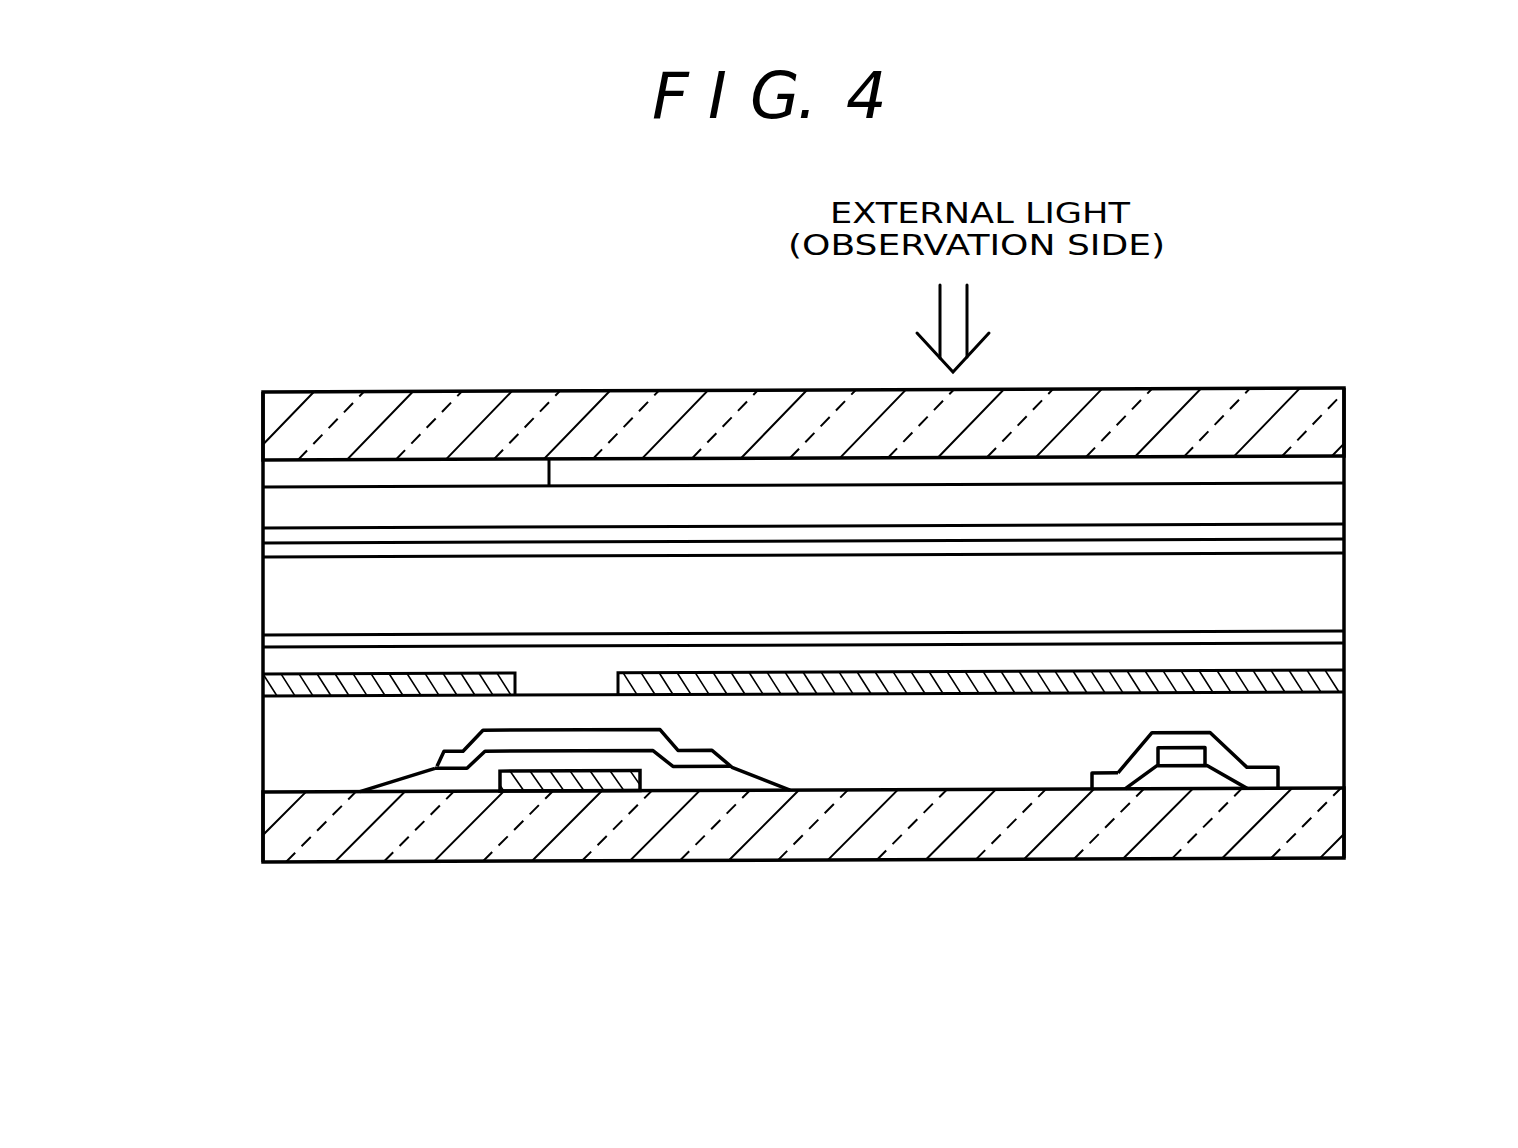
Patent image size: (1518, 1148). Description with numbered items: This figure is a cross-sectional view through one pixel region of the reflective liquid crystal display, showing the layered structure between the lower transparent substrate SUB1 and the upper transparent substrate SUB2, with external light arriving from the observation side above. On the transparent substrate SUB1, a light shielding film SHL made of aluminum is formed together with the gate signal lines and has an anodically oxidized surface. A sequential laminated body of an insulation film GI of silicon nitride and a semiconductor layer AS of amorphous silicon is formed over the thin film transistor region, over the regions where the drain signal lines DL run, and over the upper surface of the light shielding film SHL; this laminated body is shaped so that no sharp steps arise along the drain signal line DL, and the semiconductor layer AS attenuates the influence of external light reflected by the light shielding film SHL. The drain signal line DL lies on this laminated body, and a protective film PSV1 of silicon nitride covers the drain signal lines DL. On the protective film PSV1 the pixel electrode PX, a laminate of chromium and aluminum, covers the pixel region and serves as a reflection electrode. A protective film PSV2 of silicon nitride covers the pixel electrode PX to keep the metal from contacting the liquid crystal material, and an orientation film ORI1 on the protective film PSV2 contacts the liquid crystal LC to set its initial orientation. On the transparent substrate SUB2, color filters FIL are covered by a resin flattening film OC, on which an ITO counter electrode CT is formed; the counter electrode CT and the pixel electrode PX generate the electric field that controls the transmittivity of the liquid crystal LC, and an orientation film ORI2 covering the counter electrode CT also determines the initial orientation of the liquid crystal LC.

The transparent substrate SUB2 is at (1333, 423).
The color filter FIL is at (1333, 468).
The flattening film OC is at (1327, 507).
The counter electrode CT is at (1332, 532).
The orientation film ORI2 is at (1335, 543).
The liquid crystal LC is at (1333, 589).
The orientation film ORI1 is at (1340, 633).
The protective film PSV2 is at (1340, 670).
The pixel electrode PX is at (1340, 687).
The protective film PSV1 is at (1315, 753).
The transparent substrate SUB1 is at (1332, 817).
The insulation film GI is at (433, 787).
The light shielding film SHL is at (572, 783).
The semiconductor layer AS is at (697, 762).
The drain signal line DL is at (1107, 782).